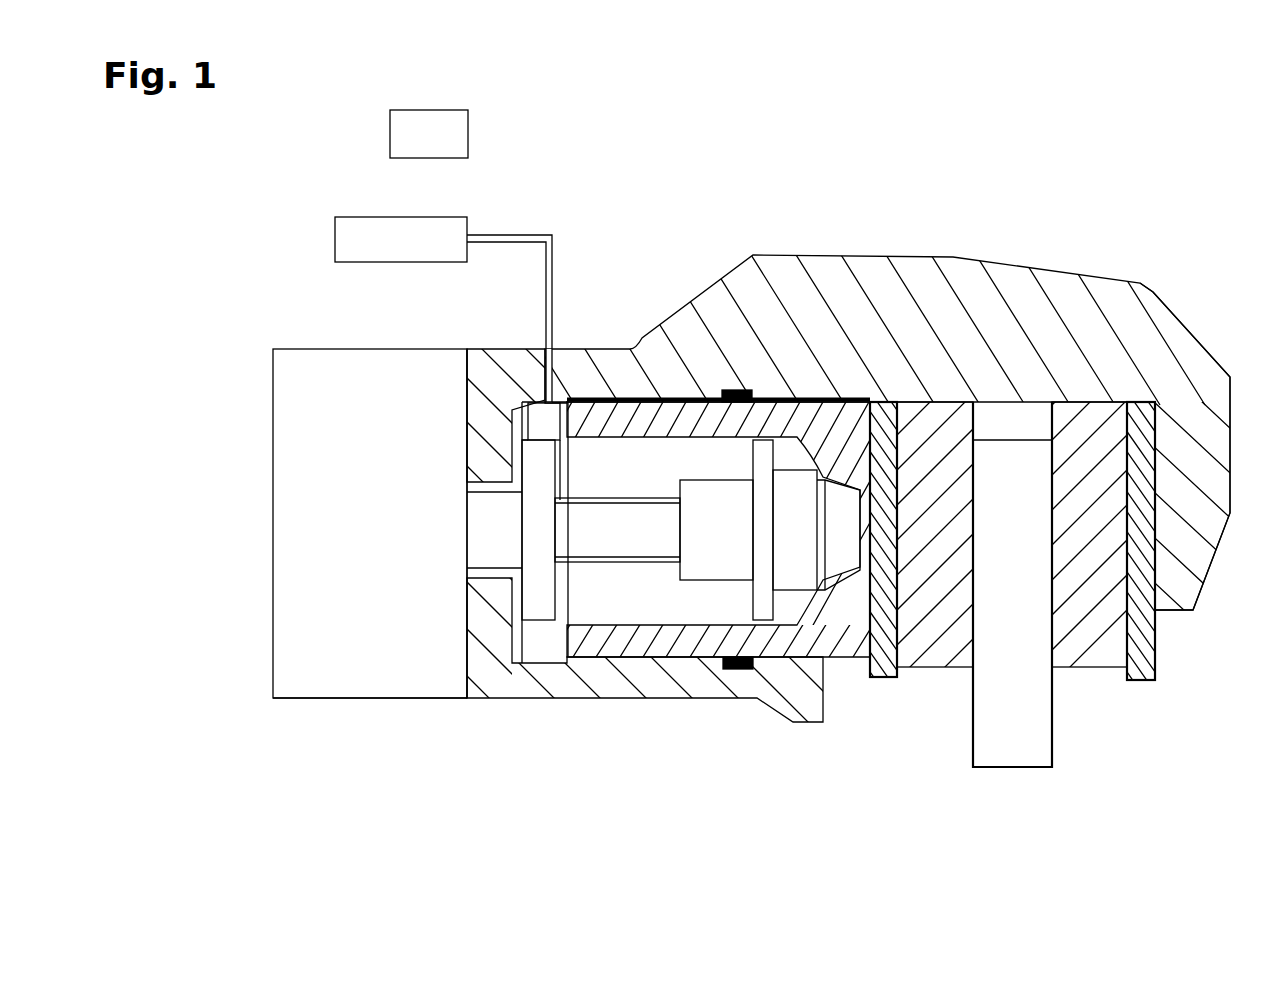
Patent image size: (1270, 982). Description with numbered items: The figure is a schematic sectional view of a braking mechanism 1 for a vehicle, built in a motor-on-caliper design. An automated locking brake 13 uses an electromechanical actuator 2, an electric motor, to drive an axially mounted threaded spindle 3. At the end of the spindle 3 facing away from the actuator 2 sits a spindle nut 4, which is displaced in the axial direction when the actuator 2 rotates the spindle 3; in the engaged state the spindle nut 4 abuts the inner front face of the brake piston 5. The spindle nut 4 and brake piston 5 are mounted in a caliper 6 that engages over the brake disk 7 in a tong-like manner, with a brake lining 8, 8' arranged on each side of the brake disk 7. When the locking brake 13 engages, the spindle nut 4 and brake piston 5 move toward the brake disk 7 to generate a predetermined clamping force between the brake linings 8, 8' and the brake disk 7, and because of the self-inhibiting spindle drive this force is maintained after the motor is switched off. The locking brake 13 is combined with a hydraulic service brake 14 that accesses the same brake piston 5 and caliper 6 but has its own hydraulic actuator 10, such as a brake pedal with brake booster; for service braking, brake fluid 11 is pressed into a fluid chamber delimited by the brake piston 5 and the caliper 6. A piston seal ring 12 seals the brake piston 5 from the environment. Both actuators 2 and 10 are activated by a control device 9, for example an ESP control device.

The braking mechanism 1 is at (1116, 230).
The electromechanical actuator 2 is at (285, 447).
The spindle 3 is at (615, 533).
The spindle nut 4 is at (722, 545).
The brake piston 5 is at (668, 643).
The caliper 6 is at (872, 270).
The brake disk 7 is at (1012, 737).
The brake lining 8 is at (920, 612).
The brake lining 8' is at (1029, 612).
The control device 9 is at (390, 130).
The hydraulic actuator 10 is at (335, 236).
The brake fluid 11 is at (536, 645).
The piston seal ring 12 is at (738, 669).
The automated locking brake 13 is at (342, 742).
The service brake 14 is at (528, 177).